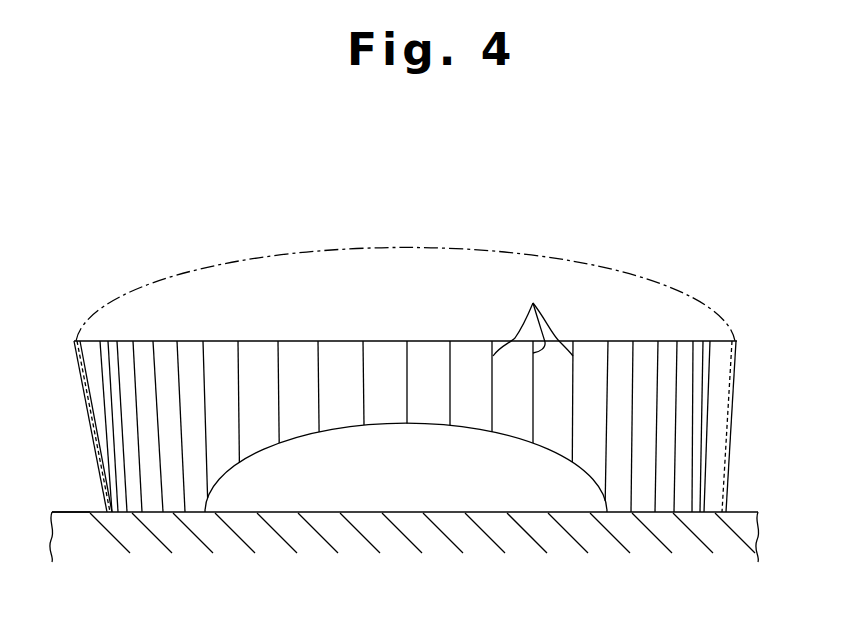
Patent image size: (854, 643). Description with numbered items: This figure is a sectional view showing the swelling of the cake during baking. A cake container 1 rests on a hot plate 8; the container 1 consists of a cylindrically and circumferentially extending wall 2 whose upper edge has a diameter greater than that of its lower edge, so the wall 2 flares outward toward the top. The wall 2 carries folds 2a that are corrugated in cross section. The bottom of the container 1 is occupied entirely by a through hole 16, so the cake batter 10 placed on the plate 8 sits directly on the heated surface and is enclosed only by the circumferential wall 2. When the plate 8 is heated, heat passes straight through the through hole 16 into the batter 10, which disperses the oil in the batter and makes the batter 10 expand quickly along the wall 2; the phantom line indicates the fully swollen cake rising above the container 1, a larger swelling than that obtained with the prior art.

The cake container 1 is at (738, 342).
The circumferentially extending wall 2 is at (722, 430).
The folds 2a is at (533, 314).
The hot plate 8 is at (74, 522).
The cake batter 10 is at (422, 243).
The through hole 16 is at (657, 513).